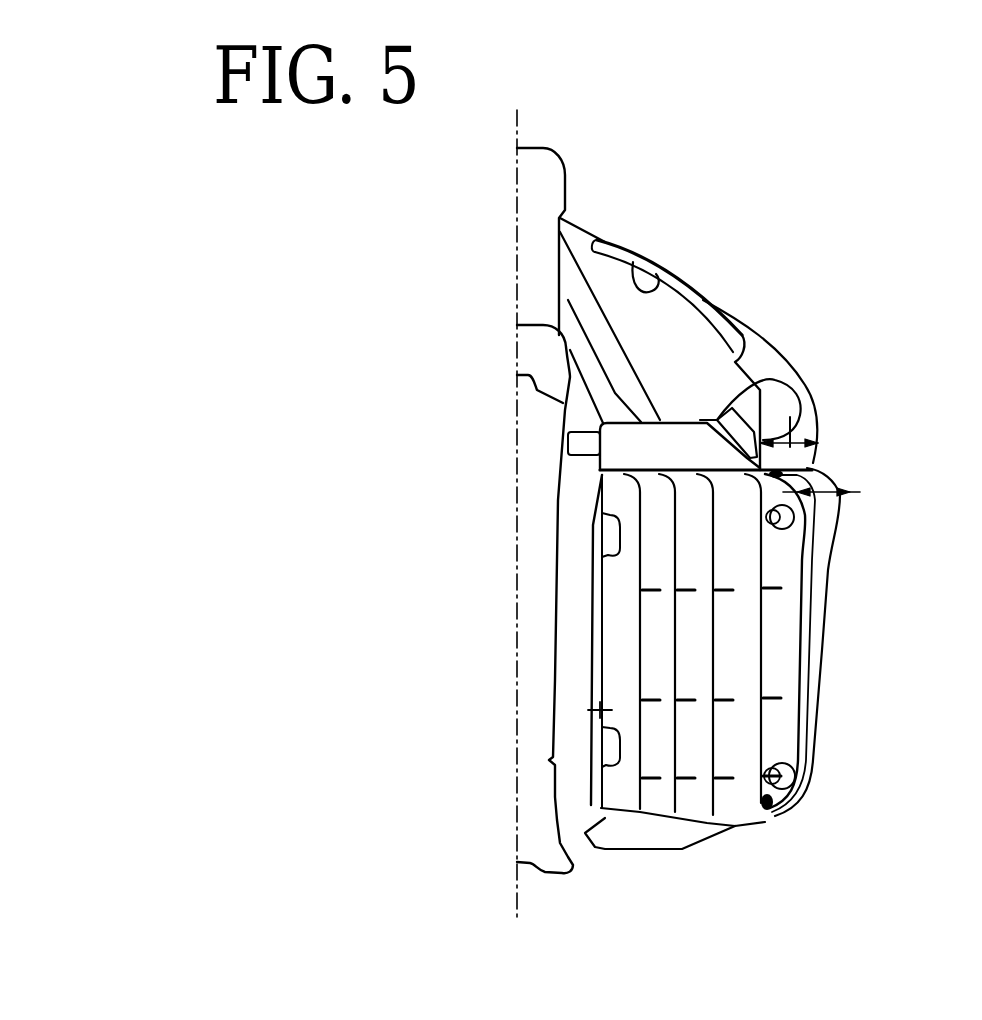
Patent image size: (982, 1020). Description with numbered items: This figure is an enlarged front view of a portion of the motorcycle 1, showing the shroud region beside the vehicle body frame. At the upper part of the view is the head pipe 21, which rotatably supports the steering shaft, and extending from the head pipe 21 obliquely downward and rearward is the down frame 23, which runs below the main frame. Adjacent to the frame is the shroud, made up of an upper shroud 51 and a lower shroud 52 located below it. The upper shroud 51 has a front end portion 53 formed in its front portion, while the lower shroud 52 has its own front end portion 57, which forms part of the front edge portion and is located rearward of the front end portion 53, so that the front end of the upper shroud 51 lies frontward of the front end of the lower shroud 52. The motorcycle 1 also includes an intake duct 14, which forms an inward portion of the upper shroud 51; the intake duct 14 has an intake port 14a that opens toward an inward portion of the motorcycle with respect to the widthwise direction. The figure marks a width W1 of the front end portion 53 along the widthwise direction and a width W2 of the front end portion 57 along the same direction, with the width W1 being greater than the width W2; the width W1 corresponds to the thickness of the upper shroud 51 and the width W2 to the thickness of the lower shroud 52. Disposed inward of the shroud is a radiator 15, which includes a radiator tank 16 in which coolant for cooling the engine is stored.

The motorcycle 1 is at (857, 142).
The intake duct 14 is at (690, 358).
The intake port 14a is at (633, 262).
The radiator 15 is at (811, 643).
The radiator tank 16 is at (735, 392).
The head pipe 21 is at (550, 148).
The down frame 23 is at (522, 620).
The upper shroud 51 is at (715, 302).
The lower shroud 52 is at (838, 560).
The front end portion 53 is at (820, 430).
The front end portion 57 is at (839, 510).
The width W1 is at (806, 428).
The width W2 is at (833, 475).